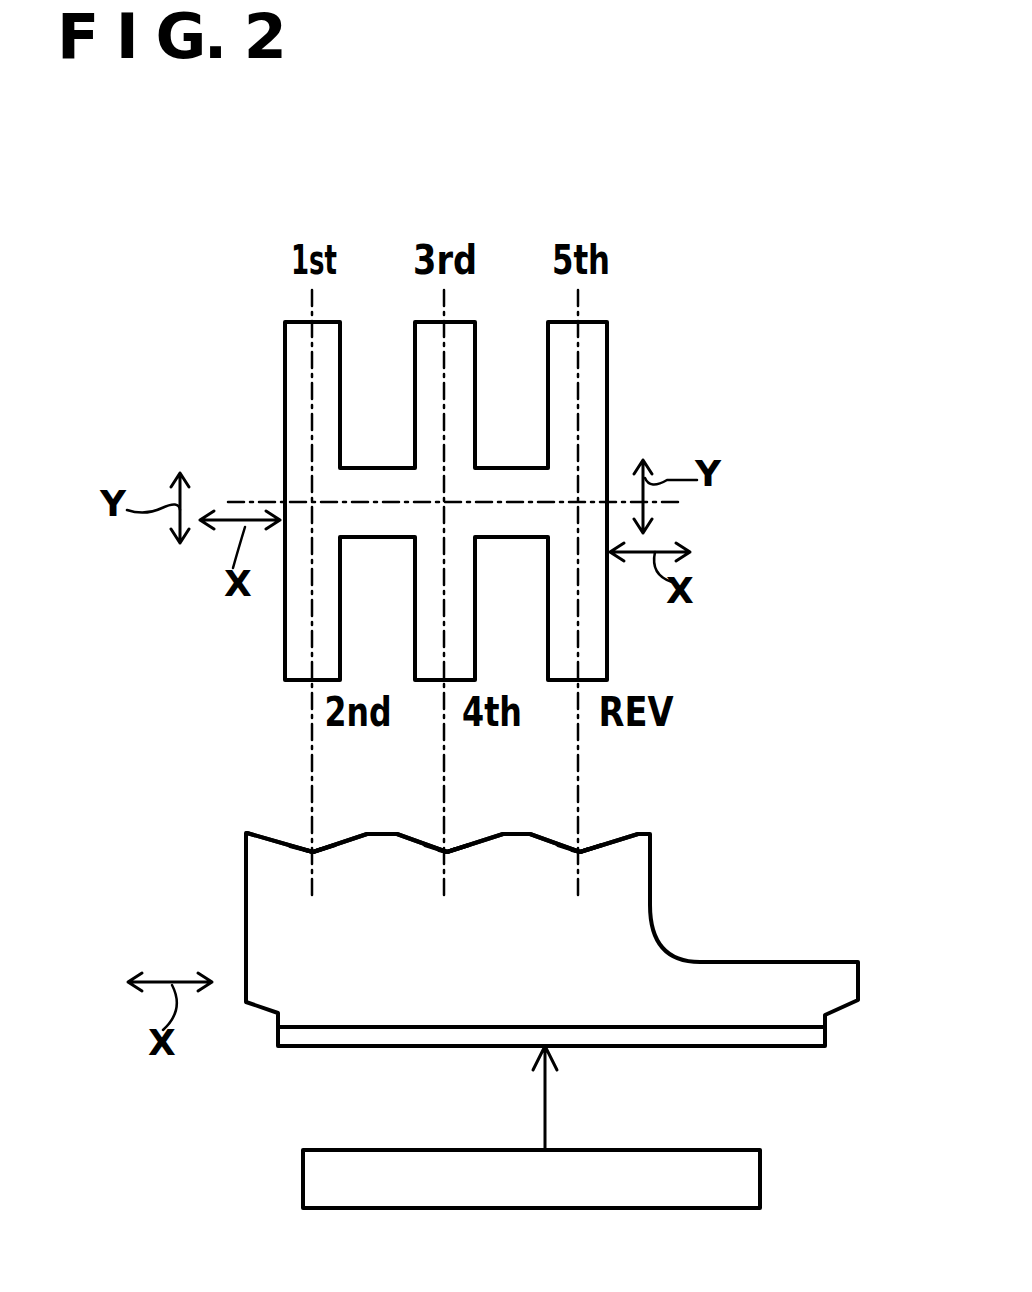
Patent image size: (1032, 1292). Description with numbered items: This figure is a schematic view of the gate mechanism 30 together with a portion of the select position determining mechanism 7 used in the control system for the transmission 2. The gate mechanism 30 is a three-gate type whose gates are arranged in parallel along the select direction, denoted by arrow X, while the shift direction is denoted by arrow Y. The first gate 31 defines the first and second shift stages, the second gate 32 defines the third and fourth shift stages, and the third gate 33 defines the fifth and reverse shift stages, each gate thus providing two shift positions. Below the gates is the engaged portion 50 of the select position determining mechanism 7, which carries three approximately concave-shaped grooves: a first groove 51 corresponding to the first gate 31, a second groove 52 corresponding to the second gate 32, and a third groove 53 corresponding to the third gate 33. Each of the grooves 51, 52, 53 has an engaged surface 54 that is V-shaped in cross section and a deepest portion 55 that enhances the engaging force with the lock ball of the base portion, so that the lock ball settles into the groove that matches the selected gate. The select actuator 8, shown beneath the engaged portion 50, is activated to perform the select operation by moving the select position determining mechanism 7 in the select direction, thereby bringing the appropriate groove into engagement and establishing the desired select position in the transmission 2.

The transmission 2 is at (682, 368).
The select position determining mechanism 7 is at (678, 325).
The select actuator 8 is at (760, 1148).
The gate mechanism 30 is at (272, 352).
The first gate 31 is at (284, 447).
The second gate 32 is at (415, 425).
The third gate 33 is at (608, 424).
The engaged portion 50 is at (453, 998).
The first groove 51 is at (293, 852).
The second groove 52 is at (463, 852).
The third groove 53 is at (598, 845).
The engaged surface 54 is at (297, 845).
The deepest portion 55 is at (315, 853).